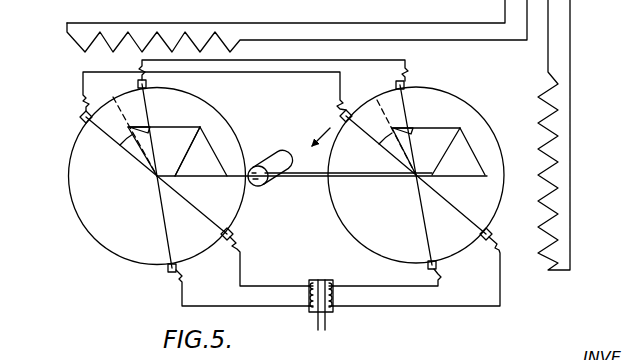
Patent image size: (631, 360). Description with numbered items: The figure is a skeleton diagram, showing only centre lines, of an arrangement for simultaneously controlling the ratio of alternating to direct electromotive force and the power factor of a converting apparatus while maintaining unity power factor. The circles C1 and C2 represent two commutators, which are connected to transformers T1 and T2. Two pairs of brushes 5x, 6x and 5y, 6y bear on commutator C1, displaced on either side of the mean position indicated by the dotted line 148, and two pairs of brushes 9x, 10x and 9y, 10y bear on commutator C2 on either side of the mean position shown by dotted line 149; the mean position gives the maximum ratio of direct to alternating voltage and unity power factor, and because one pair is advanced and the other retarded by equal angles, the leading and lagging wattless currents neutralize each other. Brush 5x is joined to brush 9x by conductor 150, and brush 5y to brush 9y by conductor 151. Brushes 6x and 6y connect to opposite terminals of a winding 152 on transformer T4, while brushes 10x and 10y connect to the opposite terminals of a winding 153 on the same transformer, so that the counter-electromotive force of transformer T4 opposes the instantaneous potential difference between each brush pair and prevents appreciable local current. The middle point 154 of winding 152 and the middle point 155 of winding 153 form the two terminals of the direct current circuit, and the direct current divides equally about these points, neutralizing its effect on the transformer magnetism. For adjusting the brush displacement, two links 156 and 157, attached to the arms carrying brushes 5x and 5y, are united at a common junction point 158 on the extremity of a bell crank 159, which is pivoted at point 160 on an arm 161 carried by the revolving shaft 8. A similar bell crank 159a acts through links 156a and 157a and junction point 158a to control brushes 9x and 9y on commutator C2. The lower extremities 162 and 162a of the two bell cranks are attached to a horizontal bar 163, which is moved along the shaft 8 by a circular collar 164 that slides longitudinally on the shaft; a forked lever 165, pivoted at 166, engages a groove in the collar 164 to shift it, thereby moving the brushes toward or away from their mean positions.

The revolving shaft 8 is at (212, 176).
The dotted line 148 is at (125, 126).
The dotted line 149 is at (384, 125).
The conductor 150 is at (271, 72).
The conductor 151 is at (273, 59).
The winding 152 is at (310, 294).
The winding 153 is at (333, 297).
The middle point 154 is at (315, 277).
The middle point 155 is at (326, 283).
The link 156 is at (122, 144).
The link 157 is at (149, 127).
The junction point 158 is at (130, 127).
The bell crank 159 is at (206, 124).
The pivot point 160 is at (199, 128).
The arm 161 is at (184, 157).
The lower extremity of bell crank 162 is at (226, 172).
The horizontal bar 163 is at (306, 174).
The circular collar 164 is at (265, 183).
The forked lever 165 is at (289, 154).
The pivot 166 is at (317, 135).
The link 156a is at (389, 146).
The link 157a is at (406, 128).
The junction point 158a is at (393, 128).
The bell crank 159a is at (462, 125).
The lower extremity of bell crank 162a is at (487, 172).
The brush 5x is at (80, 117).
The brush 5y is at (147, 84).
The brush 6x is at (233, 233).
The brush 6y is at (177, 268).
The brush 9x is at (341, 117).
The brush 9y is at (406, 83).
The brush 10x is at (492, 233).
The brush 10y is at (437, 266).
The commutator C1 is at (83, 236).
The commutator C2 is at (344, 231).
The transformer T1 is at (280, 27).
The transformer T2 is at (555, 151).
The transformer T4 is at (328, 307).